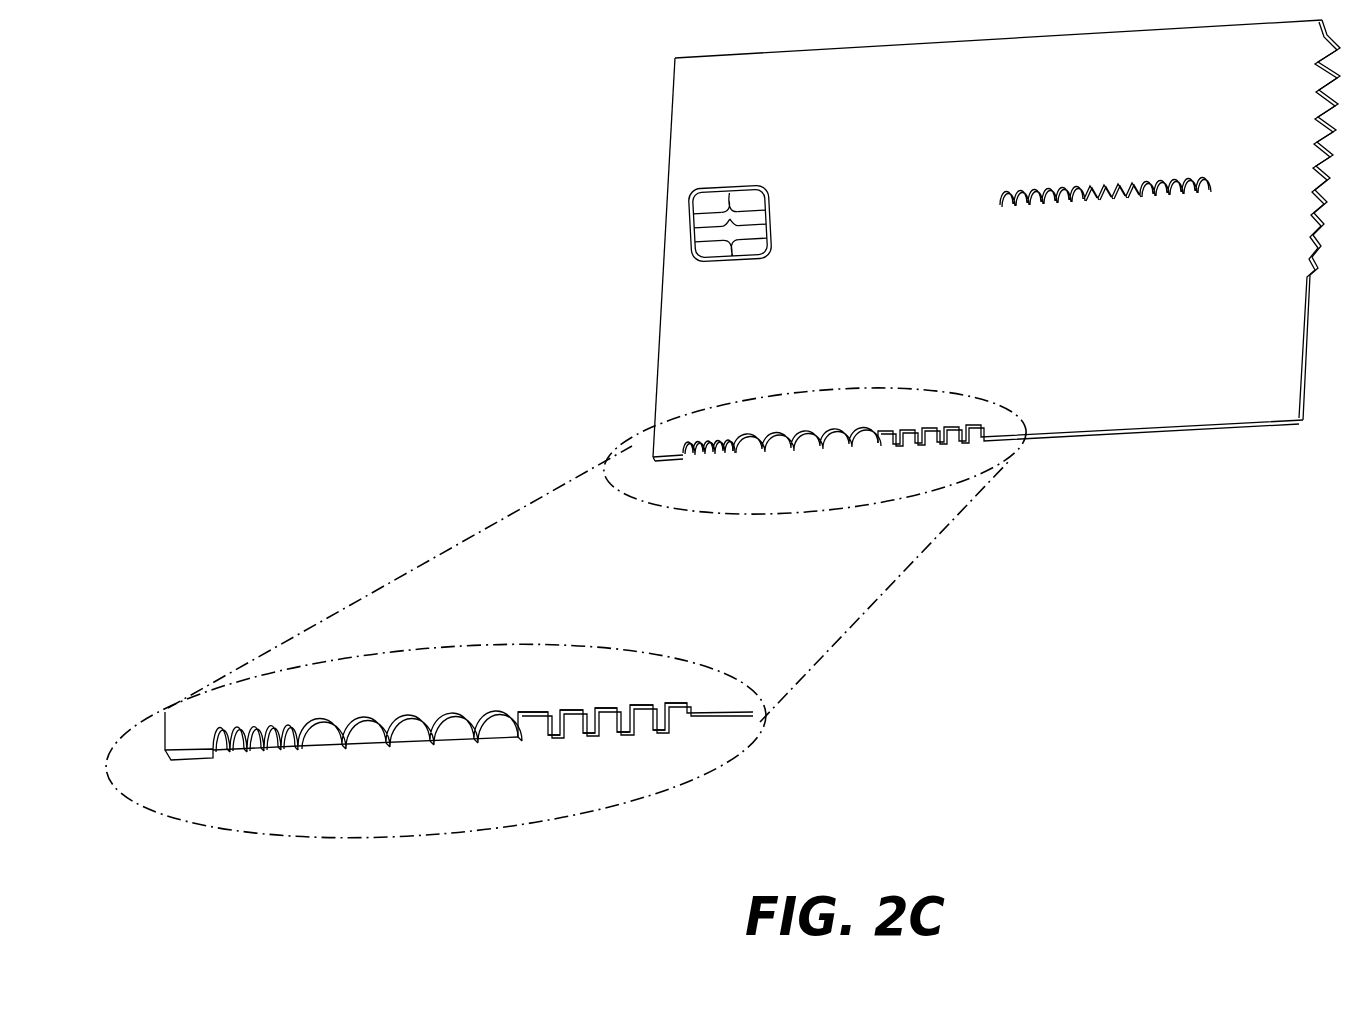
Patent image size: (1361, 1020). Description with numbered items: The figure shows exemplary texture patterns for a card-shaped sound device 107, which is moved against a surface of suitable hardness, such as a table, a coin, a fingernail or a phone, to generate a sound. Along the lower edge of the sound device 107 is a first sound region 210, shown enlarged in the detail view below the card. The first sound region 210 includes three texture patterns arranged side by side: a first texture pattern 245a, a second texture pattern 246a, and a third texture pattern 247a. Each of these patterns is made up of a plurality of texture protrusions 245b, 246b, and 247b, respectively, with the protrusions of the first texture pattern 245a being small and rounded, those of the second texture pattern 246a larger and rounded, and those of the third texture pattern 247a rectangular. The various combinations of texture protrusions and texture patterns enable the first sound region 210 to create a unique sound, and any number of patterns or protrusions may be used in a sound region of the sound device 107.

The sound device 107 is at (618, 118).
The first sound region 210 is at (152, 744).
The first texture pattern 245a is at (258, 708).
The texture protrusions 245b is at (302, 753).
The second texture pattern 246a is at (443, 700).
The texture protrusions 246b is at (392, 762).
The third texture pattern 247a is at (632, 690).
The texture protrusions 247b is at (588, 750).